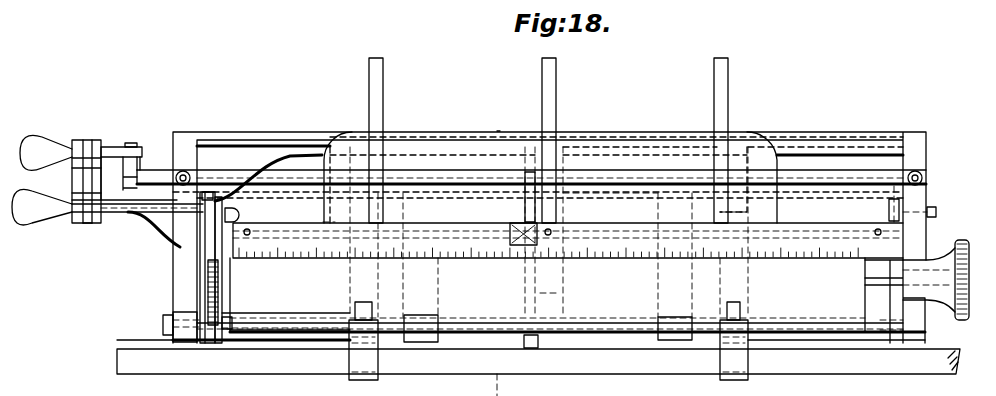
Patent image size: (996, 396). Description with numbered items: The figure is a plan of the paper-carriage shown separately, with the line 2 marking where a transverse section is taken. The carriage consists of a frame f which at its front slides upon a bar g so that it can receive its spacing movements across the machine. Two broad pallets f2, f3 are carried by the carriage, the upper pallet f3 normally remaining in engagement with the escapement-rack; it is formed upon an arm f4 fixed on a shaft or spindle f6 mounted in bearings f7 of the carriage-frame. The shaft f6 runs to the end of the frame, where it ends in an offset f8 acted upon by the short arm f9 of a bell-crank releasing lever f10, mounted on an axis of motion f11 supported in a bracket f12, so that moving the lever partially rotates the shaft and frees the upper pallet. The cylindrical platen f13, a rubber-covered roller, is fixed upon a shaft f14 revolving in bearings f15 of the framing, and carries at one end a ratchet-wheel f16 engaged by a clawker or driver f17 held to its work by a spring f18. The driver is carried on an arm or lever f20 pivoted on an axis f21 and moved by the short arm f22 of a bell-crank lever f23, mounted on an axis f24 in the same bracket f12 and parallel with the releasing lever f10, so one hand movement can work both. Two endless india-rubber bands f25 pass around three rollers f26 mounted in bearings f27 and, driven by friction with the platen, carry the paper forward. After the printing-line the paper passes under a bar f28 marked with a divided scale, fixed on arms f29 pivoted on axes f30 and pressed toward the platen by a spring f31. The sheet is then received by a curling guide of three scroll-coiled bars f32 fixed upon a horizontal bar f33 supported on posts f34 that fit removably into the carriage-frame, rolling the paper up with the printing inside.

The section line 2 is at (497, 131).
The bar g is at (538, 372).
The frame f is at (596, 252).
The lower pallet f2 is at (540, 308).
The upper pallet f3 is at (521, 318).
The arm f4 is at (516, 208).
The shaft or spindle f6 is at (427, 124).
The bearings f7 is at (557, 132).
The offset f8 is at (134, 145).
The short arm f9 is at (109, 152).
The bell-crank releasing lever f10 is at (39, 154).
The axis of motion f11 is at (78, 140).
The bracket f12 is at (95, 140).
The cylindrical platen f13 is at (547, 295).
The shaft or spindle f14 is at (207, 287).
The bearings f15 is at (200, 275).
The ratchet-wheel f16 is at (222, 296).
The clawker or driver f17 is at (238, 213).
The spring f18 is at (240, 318).
The arm or lever f20 is at (200, 300).
The axis of motion f21 is at (165, 325).
The short arm f22 is at (125, 215).
The bell-crank lever f23 is at (42, 207).
The axis f24 is at (80, 225).
The endless bands f25 is at (680, 305).
The rollers f26 is at (610, 320).
The bearings f27 is at (770, 207).
The bar f28 is at (568, 233).
The arms f29 is at (233, 182).
The axes of motion f30 is at (252, 232).
The spring f31 is at (888, 215).
The bars f32 is at (560, 140).
The horizontal bar f33 is at (531, 171).
The legs or posts f34 is at (940, 168).